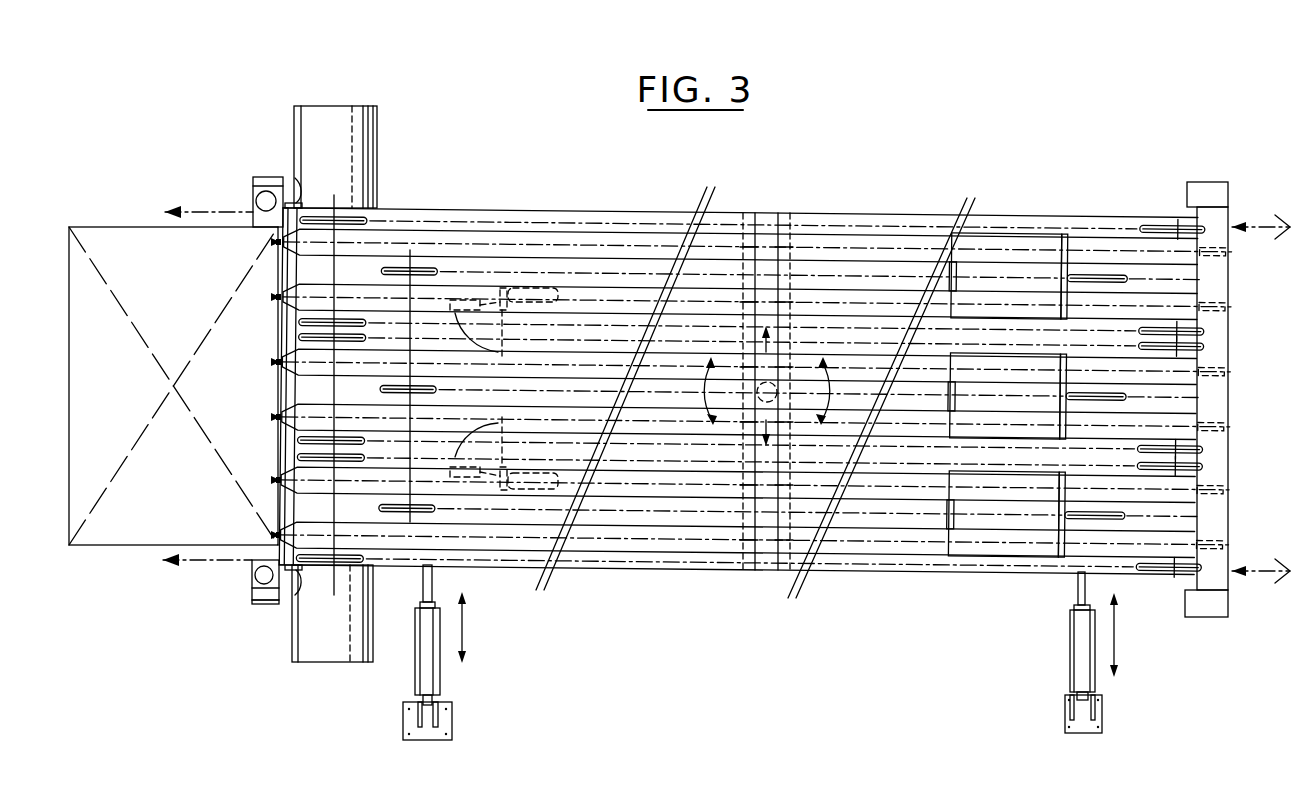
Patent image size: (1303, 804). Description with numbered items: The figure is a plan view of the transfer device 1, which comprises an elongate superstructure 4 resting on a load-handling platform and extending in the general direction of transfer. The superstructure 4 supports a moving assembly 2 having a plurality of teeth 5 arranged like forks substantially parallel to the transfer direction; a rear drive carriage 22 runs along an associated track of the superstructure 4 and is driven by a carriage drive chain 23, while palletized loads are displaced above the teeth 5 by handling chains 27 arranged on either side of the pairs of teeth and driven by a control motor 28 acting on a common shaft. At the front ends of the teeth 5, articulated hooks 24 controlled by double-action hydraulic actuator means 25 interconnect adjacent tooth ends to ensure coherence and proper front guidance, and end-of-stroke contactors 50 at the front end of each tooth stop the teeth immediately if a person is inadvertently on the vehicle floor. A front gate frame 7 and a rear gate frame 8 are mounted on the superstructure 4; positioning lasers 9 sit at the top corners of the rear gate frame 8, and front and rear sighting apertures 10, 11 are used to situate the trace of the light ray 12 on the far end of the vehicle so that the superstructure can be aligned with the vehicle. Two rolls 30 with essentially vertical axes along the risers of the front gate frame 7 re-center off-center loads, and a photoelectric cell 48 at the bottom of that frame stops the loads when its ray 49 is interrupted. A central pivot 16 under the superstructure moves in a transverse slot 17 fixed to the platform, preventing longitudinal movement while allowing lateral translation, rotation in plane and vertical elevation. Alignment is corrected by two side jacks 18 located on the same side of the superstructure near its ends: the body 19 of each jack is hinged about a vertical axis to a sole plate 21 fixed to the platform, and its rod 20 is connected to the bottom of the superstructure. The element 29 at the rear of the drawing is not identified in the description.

The transfer device 1 is at (894, 189).
The moving assembly 2 is at (1045, 235).
The elongate superstructure 4 is at (1118, 558).
The teeth 5 is at (822, 228).
The front gate frame 7 is at (268, 597).
The rear gate frame 8 is at (1218, 276).
The positioning laser 9 is at (1205, 185).
The front sighting aperture 10 is at (1241, 218).
The rear sighting aperture 11 is at (258, 217).
The light ray 12 is at (197, 211).
The central pivot 16 is at (770, 402).
The transverse slot 17 is at (782, 228).
The side jack 18 is at (408, 677).
The jack body 19 is at (425, 628).
The jack rod 20 is at (433, 578).
The sole plate 21 is at (428, 732).
The rear drive carriage 22 is at (1048, 278).
The carriage drive chain 23 is at (990, 278).
The articulated hook 24 is at (476, 300).
The double-action hydraulic actuator means 25 is at (541, 290).
The handling chain 27 is at (905, 330).
The control motor 28 is at (377, 148).
The drive housing 29 is at (108, 530).
The roll 30 is at (270, 190).
The photoelectric cell 48 is at (297, 195).
The ray 49 is at (292, 505).
The end-of-stroke contactor 50 is at (276, 357).